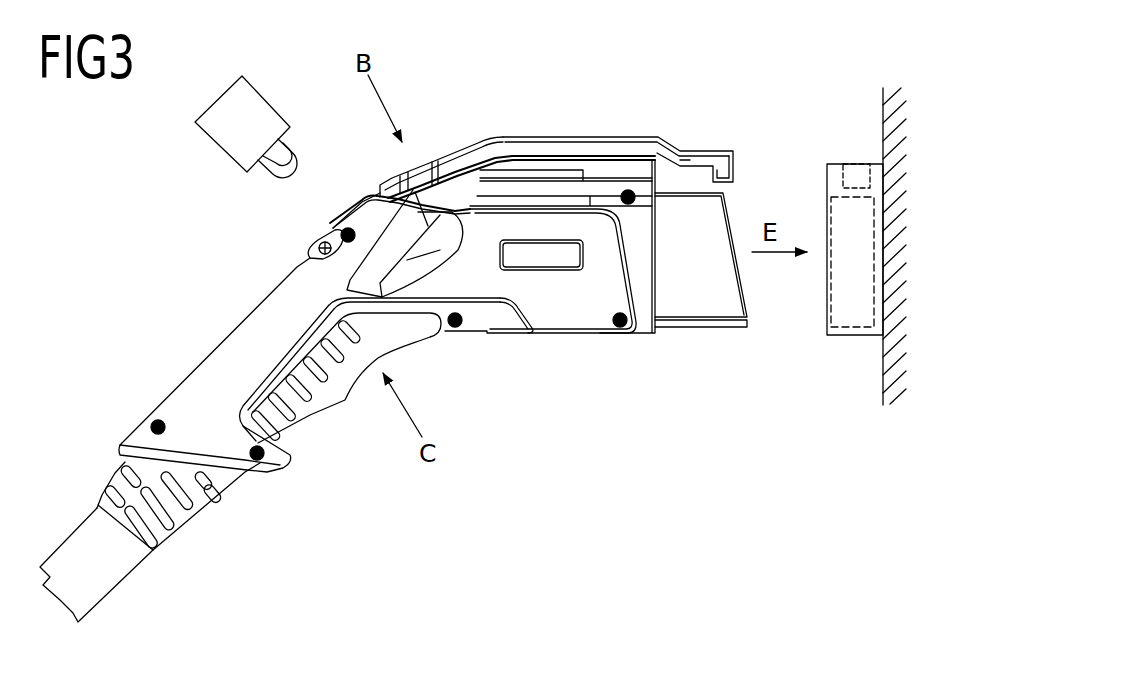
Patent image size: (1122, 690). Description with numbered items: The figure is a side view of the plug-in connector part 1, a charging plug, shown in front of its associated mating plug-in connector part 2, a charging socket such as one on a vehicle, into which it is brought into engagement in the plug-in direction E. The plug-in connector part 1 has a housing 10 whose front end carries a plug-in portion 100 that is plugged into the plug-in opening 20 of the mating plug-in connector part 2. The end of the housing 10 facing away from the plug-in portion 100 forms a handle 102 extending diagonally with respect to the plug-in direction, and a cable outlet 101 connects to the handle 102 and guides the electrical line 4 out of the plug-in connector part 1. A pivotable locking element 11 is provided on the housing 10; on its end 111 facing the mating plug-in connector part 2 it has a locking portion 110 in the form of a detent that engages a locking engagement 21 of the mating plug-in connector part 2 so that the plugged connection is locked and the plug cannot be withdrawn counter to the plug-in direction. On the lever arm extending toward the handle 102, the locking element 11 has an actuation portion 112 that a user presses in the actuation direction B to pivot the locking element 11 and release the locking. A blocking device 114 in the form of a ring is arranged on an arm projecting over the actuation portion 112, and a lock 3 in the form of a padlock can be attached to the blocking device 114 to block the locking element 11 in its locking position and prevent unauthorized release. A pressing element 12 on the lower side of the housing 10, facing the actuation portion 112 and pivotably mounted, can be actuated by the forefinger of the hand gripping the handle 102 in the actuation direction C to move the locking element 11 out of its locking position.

The plug-in connector part 1 is at (498, 122).
The mating plug-in connector part 2 is at (847, 88).
The lock 3 is at (247, 100).
The electrical line 4 is at (110, 577).
The housing 10 is at (502, 322).
The locking element 11 is at (567, 148).
The pressing element 12 is at (357, 367).
The plug-in opening 20 is at (845, 320).
The locking engagement 21 is at (850, 175).
The plug-in portion 100 is at (688, 318).
The cable outlet 101 is at (190, 520).
The handle 102 is at (232, 357).
The locking portion 110 is at (737, 177).
The end 111 is at (702, 157).
The actuation portion 112 is at (455, 157).
The blocking device 114 is at (310, 250).